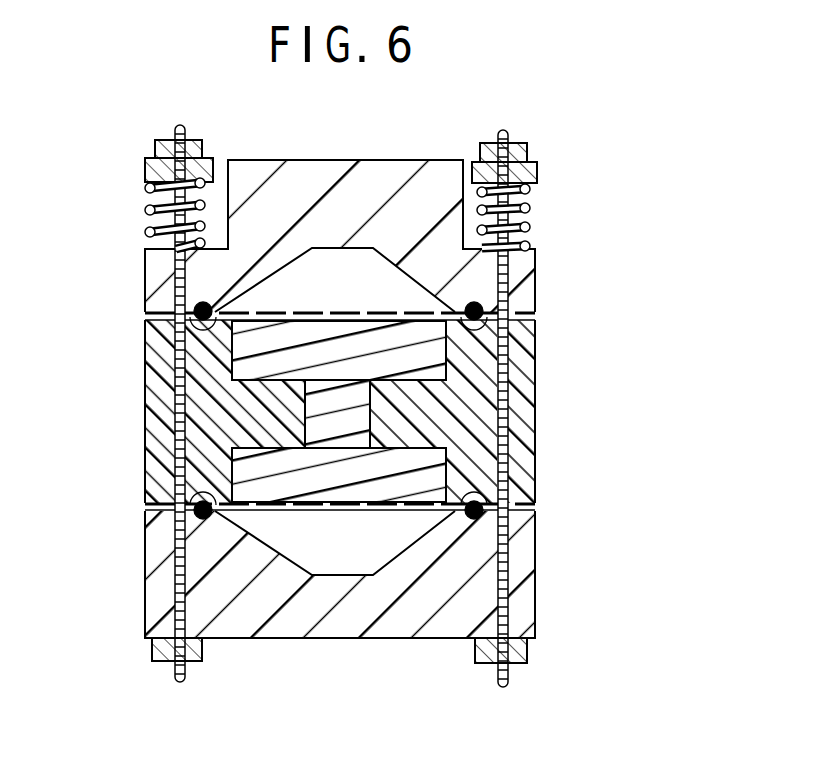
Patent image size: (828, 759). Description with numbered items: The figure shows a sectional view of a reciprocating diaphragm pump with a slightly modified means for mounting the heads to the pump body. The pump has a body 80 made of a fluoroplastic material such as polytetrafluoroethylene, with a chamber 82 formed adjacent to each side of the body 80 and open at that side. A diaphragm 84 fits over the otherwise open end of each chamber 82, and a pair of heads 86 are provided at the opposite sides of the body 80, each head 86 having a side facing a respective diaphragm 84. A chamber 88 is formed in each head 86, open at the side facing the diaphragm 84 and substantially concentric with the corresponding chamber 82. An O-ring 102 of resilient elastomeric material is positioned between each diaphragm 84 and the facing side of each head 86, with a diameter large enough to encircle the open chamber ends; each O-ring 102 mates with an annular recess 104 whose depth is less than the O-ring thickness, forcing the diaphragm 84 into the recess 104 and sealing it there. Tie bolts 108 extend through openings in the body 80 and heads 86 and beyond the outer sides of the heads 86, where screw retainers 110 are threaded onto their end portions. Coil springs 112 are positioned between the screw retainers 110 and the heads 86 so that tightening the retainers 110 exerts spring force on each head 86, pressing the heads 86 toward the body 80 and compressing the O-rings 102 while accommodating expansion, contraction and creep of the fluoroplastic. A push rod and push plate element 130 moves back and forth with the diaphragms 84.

The body 80 is at (192, 427).
The chamber 82 is at (240, 462).
The diaphragm 84 is at (312, 310).
The head 86 is at (300, 178).
The chamber 88 is at (363, 277).
The O-ring 102 is at (210, 302).
The annular recess 104 is at (193, 348).
The tie bolt 108 is at (175, 265).
The screw retainer 110 is at (197, 142).
The coil spring 112 is at (150, 212).
The push rod and push plate element 130 is at (358, 417).